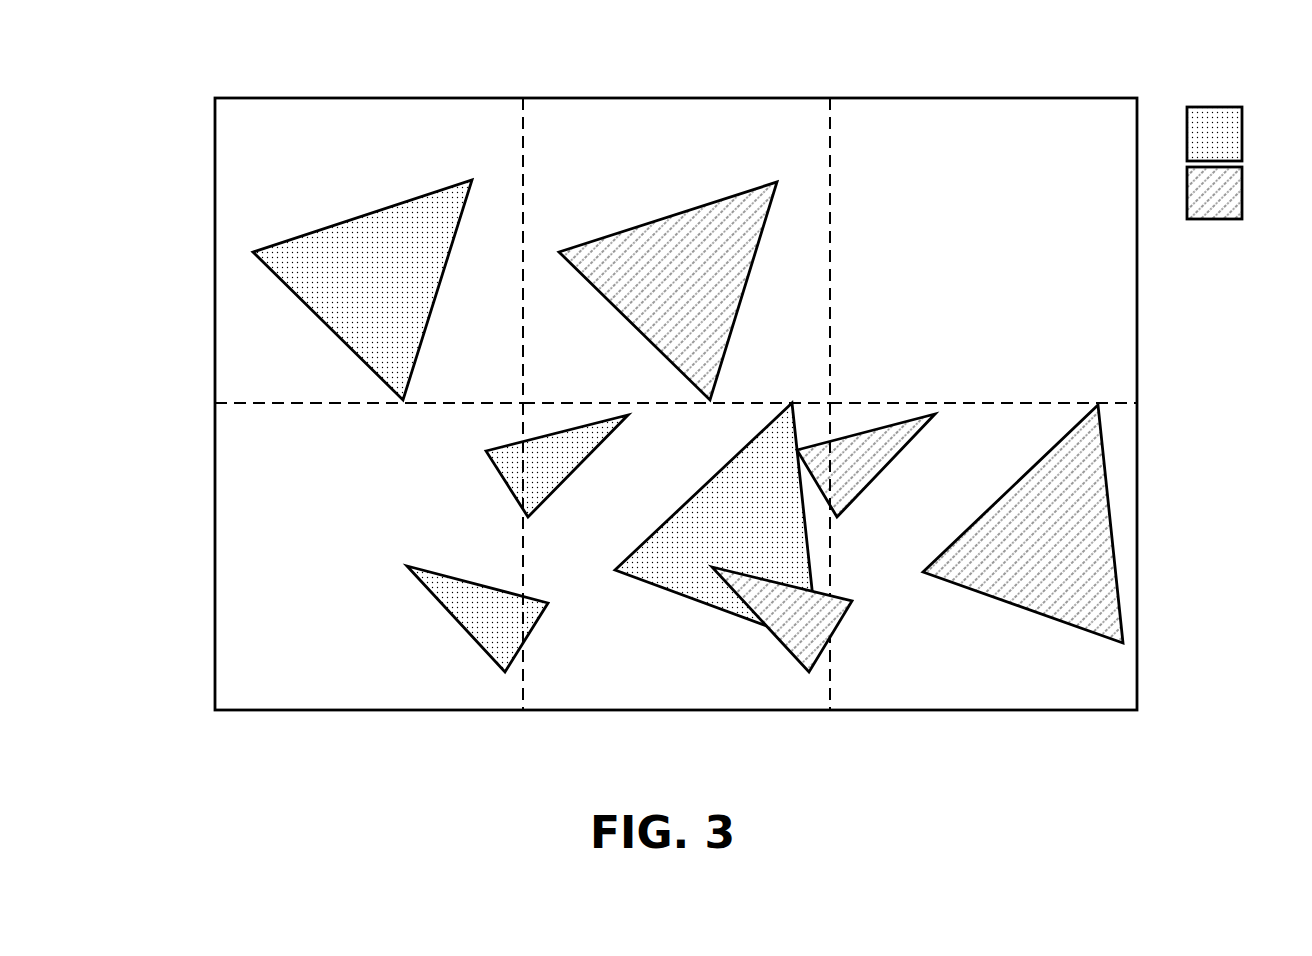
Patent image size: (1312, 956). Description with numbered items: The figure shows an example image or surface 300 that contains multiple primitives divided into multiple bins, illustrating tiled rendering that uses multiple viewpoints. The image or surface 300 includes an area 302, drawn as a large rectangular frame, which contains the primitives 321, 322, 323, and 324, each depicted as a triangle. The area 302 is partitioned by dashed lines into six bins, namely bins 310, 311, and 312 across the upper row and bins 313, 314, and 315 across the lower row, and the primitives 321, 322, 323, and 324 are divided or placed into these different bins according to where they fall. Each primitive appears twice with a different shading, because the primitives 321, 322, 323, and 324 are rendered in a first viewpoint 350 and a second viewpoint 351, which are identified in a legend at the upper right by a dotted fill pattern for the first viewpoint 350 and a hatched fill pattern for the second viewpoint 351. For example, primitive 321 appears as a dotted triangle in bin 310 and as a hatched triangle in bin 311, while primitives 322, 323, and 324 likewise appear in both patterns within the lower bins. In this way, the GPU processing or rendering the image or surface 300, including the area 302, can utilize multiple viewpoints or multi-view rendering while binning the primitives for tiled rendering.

The image or surface 300 is at (152, 70).
The area 302 is at (693, 97).
The bin 310 is at (369, 388).
The bin 311 is at (676, 250).
The bin 312 is at (983, 250).
The bin 313 is at (430, 556).
The bin 314 is at (735, 556).
The bin 315 is at (984, 683).
The primitive 321 is at (472, 180).
The primitive 322 is at (486, 451).
The primitive 323 is at (407, 566).
The primitive 324 is at (615, 570).
The first viewpoint 350 is at (1246, 134).
The second viewpoint 351 is at (1246, 193).